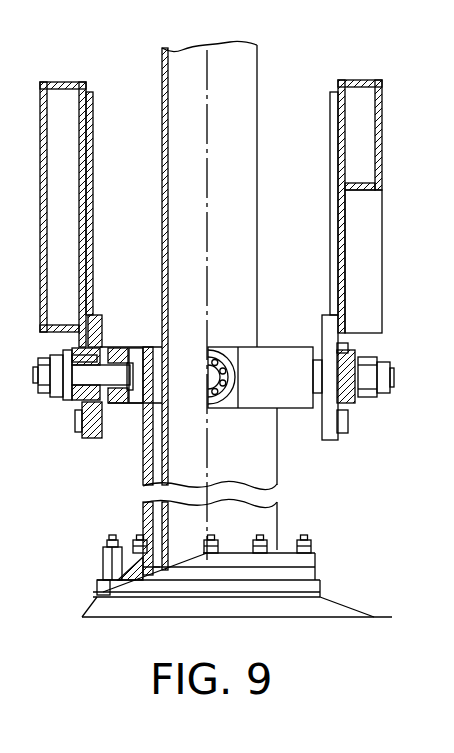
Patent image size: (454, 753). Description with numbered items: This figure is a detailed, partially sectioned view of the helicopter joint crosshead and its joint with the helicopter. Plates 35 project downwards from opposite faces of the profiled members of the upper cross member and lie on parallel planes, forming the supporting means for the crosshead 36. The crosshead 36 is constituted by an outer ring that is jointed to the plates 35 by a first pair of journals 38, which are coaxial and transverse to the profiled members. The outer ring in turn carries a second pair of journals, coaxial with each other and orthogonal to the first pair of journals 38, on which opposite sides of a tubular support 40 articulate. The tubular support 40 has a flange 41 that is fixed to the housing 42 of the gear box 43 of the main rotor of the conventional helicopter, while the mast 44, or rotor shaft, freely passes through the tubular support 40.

The plate 35 is at (334, 234).
The crosshead 36 is at (283, 420).
The first pair of journals 38 is at (83, 373).
The tubular support 40 is at (145, 455).
The flange 41 is at (100, 558).
The housing 42 is at (149, 607).
The gear box 43 is at (371, 604).
The mast 44 is at (249, 192).